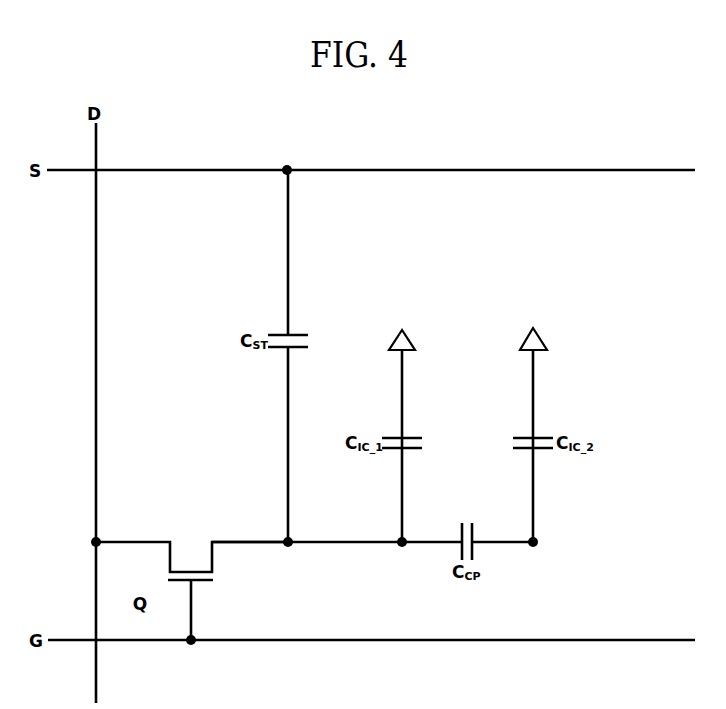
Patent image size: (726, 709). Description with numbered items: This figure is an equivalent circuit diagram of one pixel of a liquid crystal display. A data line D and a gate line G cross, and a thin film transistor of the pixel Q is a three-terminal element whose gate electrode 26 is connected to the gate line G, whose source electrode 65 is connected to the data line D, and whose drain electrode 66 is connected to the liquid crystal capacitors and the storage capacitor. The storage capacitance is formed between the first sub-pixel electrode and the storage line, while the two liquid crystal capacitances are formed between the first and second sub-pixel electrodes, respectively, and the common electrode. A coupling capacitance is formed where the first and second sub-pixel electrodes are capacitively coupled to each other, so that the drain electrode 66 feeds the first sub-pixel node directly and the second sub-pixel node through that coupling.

The source electrode 65 is at (168, 562).
The drain electrode 66 is at (215, 562).
The gate electrode 26 is at (192, 608).